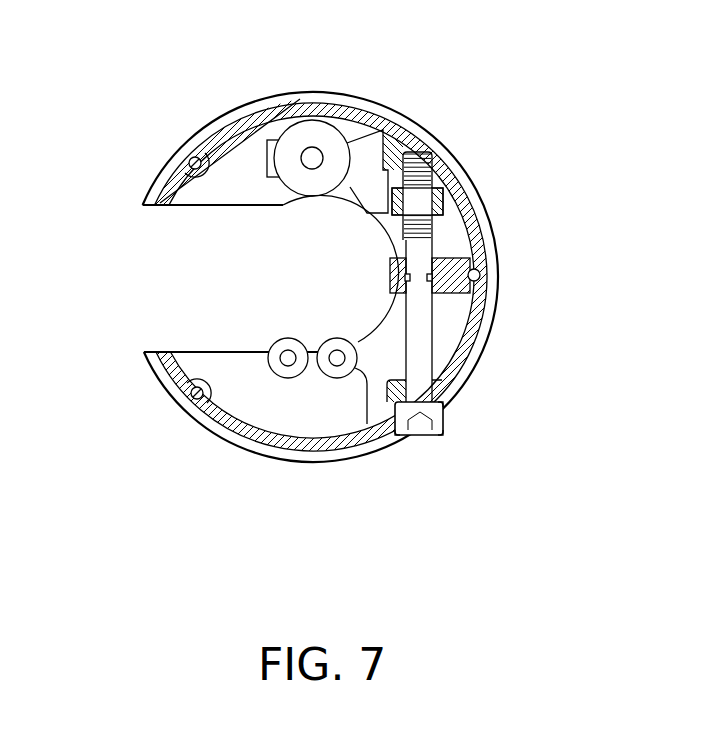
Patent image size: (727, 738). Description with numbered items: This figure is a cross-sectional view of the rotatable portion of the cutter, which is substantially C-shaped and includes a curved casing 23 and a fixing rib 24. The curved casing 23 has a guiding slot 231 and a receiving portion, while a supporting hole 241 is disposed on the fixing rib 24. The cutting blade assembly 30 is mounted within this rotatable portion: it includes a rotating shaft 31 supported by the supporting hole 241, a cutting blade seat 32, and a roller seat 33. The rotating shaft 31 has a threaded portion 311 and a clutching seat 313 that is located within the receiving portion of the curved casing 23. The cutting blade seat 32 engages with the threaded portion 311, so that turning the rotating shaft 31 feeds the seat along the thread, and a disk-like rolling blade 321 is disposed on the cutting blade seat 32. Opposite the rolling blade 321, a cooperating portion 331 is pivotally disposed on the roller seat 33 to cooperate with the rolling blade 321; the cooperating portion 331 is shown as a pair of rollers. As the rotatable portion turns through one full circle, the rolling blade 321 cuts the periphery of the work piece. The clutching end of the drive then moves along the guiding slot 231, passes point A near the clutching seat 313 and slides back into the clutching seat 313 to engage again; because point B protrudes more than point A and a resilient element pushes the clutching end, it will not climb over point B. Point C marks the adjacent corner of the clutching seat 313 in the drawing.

The curved casing 23 is at (295, 461).
The guiding slot 231 is at (253, 445).
The rolling blade 321 is at (302, 137).
The cutting blade seat 32 is at (365, 143).
The threaded portion 311 is at (434, 228).
The cutting blade assembly 30 is at (445, 208).
The rotating shaft 31 is at (432, 274).
The fixing rib 24 is at (393, 270).
The supporting hole 241 is at (393, 284).
The roller seat 33 is at (348, 362).
The cooperating portion 331 is at (285, 364).
The clutching seat 313 is at (446, 420).
The point A is at (403, 437).
The point B is at (446, 436).
The point C is at (446, 403).